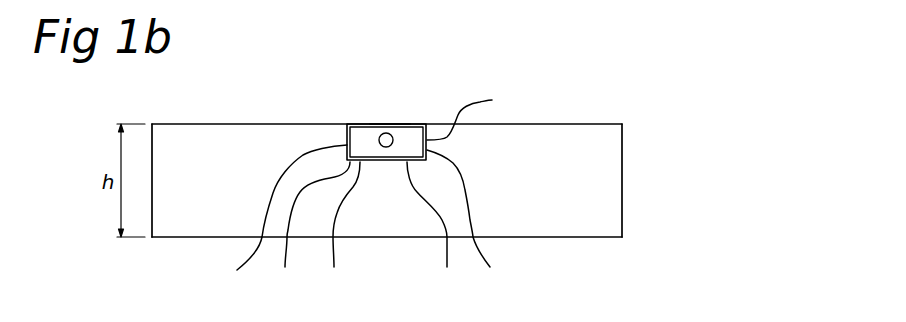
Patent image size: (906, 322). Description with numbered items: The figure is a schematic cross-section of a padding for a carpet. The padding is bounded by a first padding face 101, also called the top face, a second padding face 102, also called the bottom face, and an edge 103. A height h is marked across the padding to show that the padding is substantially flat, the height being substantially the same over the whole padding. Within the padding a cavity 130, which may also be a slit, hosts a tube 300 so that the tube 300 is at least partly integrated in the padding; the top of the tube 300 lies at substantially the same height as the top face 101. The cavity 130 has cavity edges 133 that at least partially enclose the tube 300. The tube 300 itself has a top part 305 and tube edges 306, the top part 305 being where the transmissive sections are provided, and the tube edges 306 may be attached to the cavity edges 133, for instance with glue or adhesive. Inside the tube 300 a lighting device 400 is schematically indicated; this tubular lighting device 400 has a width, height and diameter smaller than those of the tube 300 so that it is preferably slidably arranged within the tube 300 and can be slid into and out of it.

The first padding face 101 is at (263, 123).
The second padding face 102 is at (383, 237).
The edge 103 is at (622, 177).
The cavity 130 is at (347, 114).
The cavity edges 133 is at (369, 190).
The tube 300 is at (393, 122).
The top part 305 is at (368, 122).
The tube edge 306 is at (388, 225).
The lighting device 400 is at (398, 137).